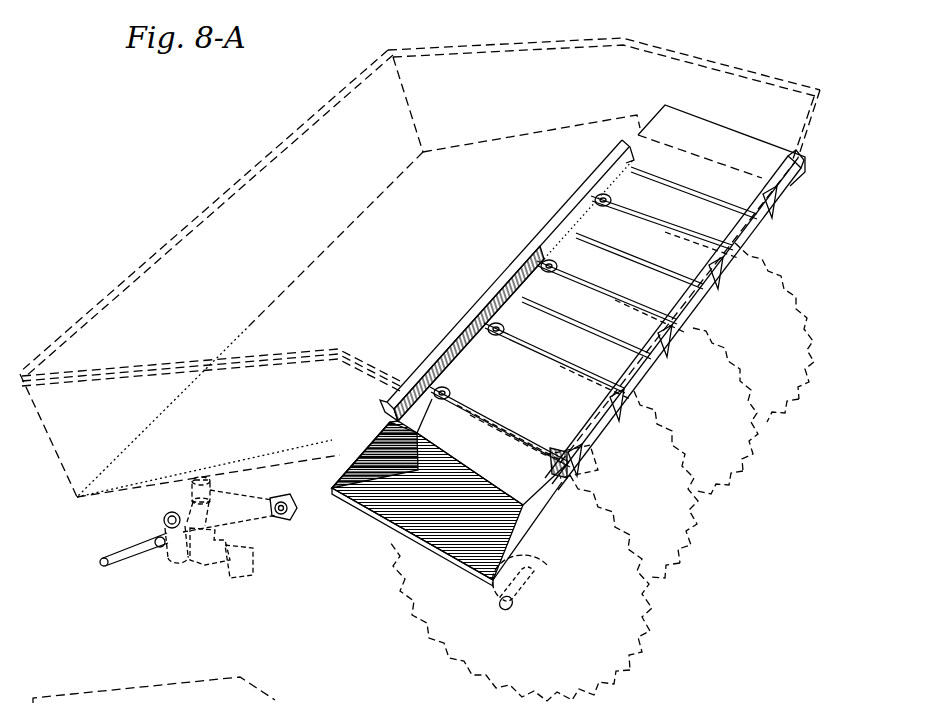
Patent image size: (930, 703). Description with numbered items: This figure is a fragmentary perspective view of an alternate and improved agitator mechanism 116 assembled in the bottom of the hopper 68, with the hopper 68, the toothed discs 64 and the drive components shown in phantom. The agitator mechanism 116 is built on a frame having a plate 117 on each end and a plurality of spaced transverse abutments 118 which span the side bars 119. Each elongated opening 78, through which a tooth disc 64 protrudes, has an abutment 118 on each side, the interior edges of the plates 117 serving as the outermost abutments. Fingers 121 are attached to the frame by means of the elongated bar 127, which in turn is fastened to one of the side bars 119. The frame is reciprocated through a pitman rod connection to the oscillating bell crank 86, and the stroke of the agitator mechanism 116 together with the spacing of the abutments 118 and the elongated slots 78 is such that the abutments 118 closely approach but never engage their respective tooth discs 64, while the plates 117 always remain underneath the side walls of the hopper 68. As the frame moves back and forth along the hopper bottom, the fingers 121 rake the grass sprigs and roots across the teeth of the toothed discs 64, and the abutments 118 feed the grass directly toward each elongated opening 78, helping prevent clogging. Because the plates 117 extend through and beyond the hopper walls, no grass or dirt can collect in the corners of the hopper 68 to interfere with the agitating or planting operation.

The toothed disc 64 is at (461, 667).
The hopper 68 is at (427, 72).
The elongated opening 78 is at (667, 223).
The bell crank 86 is at (178, 513).
The agitator mechanism 116 is at (558, 345).
The plate 117 is at (467, 569).
The transverse abutment 118 is at (658, 176).
The side bar 119 is at (622, 178).
The finger 121 is at (647, 214).
The elongated bar 127 is at (540, 234).